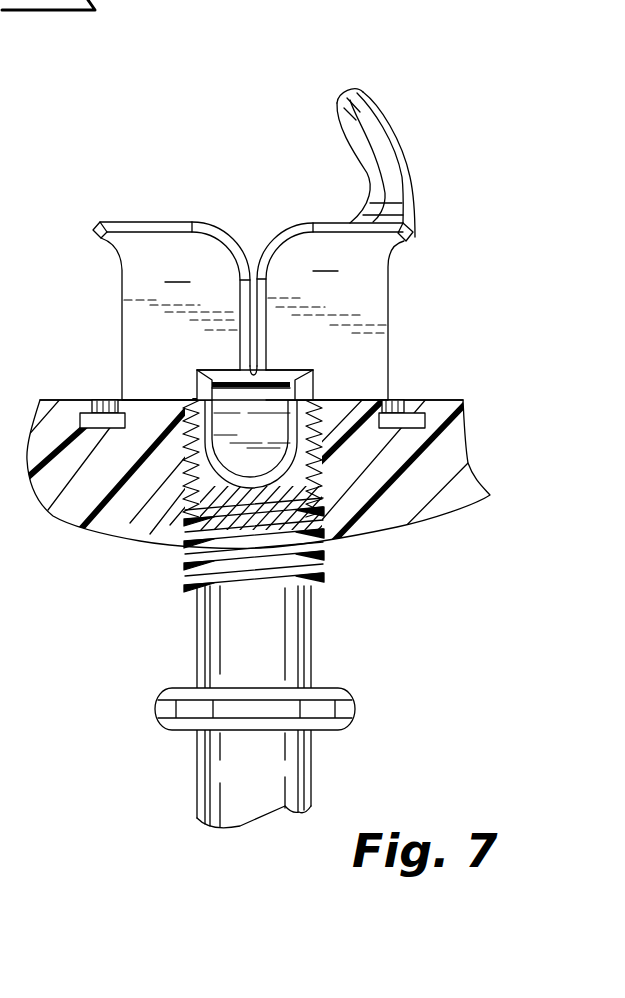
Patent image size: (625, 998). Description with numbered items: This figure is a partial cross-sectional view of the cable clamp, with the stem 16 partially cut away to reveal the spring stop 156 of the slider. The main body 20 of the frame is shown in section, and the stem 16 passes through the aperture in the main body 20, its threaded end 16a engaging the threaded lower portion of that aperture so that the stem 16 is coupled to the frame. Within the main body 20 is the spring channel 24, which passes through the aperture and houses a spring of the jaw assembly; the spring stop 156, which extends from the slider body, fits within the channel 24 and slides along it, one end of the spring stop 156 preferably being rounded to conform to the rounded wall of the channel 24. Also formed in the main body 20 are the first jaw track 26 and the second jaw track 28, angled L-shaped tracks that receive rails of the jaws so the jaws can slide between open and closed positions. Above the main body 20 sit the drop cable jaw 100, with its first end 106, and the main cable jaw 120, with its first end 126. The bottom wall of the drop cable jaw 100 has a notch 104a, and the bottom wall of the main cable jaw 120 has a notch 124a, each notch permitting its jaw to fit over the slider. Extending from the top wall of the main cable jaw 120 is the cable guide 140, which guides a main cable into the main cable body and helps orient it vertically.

The stem 16 is at (240, 663).
The threaded end 16a is at (190, 566).
The main body 20 is at (397, 535).
The spring channel 24 is at (245, 486).
The first jaw track 26 is at (98, 405).
The second jaw track 28 is at (399, 404).
The drop cable jaw 100 is at (151, 287).
The notch 104a is at (216, 368).
The first end 106 is at (181, 270).
The main cable jaw 120 is at (361, 225).
The notch 124a is at (279, 369).
The first end 126 is at (329, 259).
The cable guide 140 is at (375, 100).
The spring stop 156 is at (256, 438).